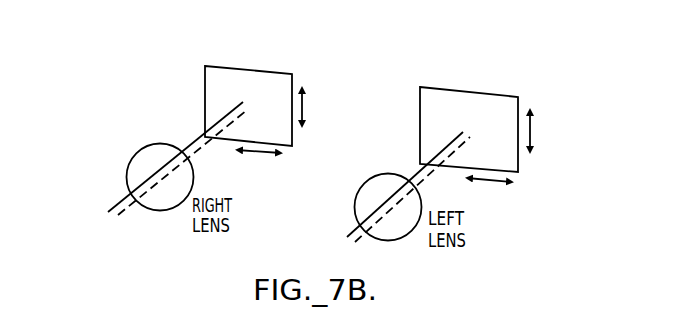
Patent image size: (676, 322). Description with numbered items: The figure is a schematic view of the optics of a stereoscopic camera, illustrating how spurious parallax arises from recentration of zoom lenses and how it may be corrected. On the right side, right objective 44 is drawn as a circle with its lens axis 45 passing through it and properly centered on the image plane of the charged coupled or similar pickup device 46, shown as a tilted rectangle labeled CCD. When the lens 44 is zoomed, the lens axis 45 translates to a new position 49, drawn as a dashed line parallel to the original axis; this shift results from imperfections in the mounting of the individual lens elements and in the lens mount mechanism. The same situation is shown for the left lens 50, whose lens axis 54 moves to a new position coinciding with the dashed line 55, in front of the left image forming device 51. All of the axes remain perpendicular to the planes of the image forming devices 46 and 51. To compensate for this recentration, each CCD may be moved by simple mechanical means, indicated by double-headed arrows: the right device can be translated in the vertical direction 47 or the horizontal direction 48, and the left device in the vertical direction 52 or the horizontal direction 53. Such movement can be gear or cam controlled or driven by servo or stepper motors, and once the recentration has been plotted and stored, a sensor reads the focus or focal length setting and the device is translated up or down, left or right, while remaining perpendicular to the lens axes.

The right objective 44 is at (143, 144).
The lens axis 45 is at (197, 138).
The charged coupled or similar pickup device 46 is at (262, 70).
The vertical direction 47 is at (303, 91).
The horizontal direction 48 is at (282, 153).
The new position of lens axis 49 is at (199, 149).
The left lens 50 is at (378, 173).
The image forming device 51 is at (492, 93).
The vertical direction 52 is at (531, 147).
The horizontal direction 53 is at (511, 182).
The lens axis 54 is at (358, 231).
The new position of lens axis 55 is at (357, 239).